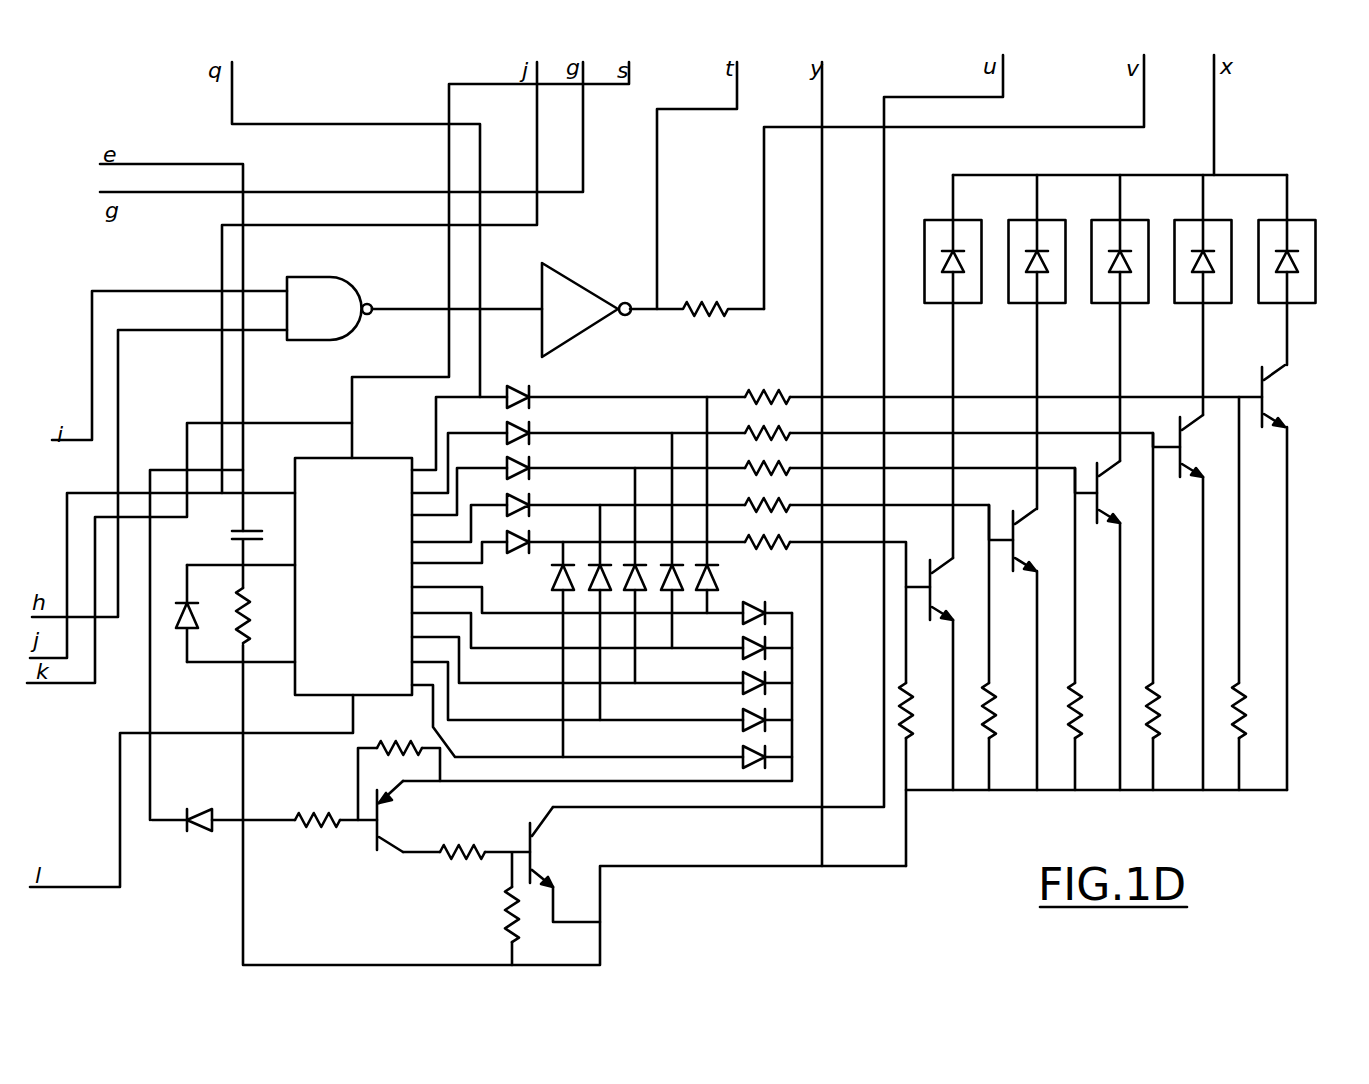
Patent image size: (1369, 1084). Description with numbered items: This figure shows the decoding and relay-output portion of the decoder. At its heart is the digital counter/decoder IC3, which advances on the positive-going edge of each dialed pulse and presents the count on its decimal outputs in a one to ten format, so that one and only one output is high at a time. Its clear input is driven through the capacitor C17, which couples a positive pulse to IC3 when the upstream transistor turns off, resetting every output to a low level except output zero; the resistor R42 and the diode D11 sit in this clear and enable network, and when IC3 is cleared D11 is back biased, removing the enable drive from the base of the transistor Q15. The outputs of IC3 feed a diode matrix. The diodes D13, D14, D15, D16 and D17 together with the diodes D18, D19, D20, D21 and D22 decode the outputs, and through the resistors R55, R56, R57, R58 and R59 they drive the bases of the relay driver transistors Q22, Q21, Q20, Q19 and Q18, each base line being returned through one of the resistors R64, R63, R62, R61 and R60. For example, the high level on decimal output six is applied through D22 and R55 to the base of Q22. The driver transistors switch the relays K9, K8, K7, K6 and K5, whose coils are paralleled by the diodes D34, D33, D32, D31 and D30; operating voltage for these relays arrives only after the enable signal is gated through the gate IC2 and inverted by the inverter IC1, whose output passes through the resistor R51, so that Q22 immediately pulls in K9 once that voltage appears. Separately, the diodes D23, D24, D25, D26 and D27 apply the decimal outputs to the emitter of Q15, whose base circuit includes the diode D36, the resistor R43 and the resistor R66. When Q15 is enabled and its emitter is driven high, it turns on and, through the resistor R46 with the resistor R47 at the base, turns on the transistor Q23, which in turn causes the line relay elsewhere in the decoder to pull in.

The NAND gate IC2 is at (329, 295).
The inverter IC1 is at (586, 309).
The digital counter/decoder IC3 is at (353, 576).
The resistor R51 is at (697, 288).
The capacitor C17 is at (221, 548).
The resistor 1M R42 is at (264, 615).
The diode D11 is at (177, 613).
The diode D36 is at (195, 808).
The resistor R43 is at (311, 798).
The resistor R66 is at (397, 729).
The transistor Q15 is at (402, 816).
The resistor R46 is at (462, 835).
The resistor R47 is at (486, 913).
The transistor Q23 is at (553, 847).
The diode D13 is at (542, 391).
The diode D14 is at (541, 426).
The diode D15 is at (541, 462).
The diode D16 is at (540, 499).
The diode D17 is at (541, 535).
The resistor R55 is at (755, 386).
The resistor R56 is at (764, 421).
The resistor R57 is at (768, 456).
The resistor R58 is at (772, 494).
The resistor R59 is at (774, 531).
The diode D18 is at (563, 577).
The diode D19 is at (600, 577).
The diode D20 is at (635, 577).
The diode D21 is at (672, 577).
The diode D22 is at (751, 577).
The diode D23 is at (780, 605).
The diode D24 is at (736, 642).
The diode D25 is at (736, 677).
The diode D26 is at (734, 713).
The diode D27 is at (732, 751).
The relay K5 is at (955, 250).
The relay K6 is at (1040, 250).
The relay K7 is at (1123, 250).
The relay K8 is at (1206, 250).
The relay K9 is at (1289, 250).
The diode D30 is at (971, 291).
The diode D31 is at (1056, 291).
The diode D32 is at (1138, 291).
The diode D33 is at (1221, 291).
The diode D34 is at (1305, 291).
The transistor Q18 is at (953, 589).
The transistor Q19 is at (1036, 540).
The transistor Q20 is at (1120, 492).
The transistor Q21 is at (1202, 446).
The transistor Q22 is at (1285, 396).
The resistor R60 is at (926, 710).
The resistor R61 is at (1009, 710).
The resistor R62 is at (1094, 710).
The resistor R63 is at (1173, 710).
The resistor R64 is at (1258, 710).